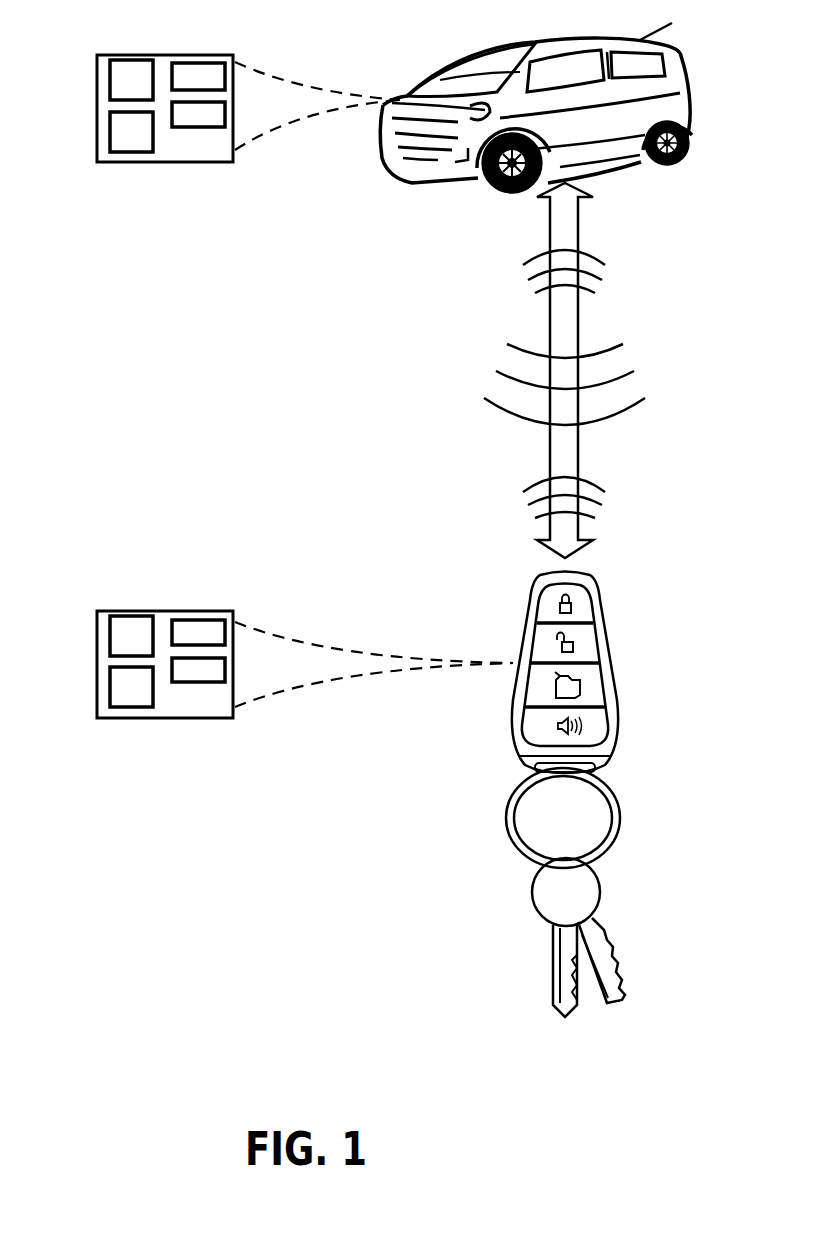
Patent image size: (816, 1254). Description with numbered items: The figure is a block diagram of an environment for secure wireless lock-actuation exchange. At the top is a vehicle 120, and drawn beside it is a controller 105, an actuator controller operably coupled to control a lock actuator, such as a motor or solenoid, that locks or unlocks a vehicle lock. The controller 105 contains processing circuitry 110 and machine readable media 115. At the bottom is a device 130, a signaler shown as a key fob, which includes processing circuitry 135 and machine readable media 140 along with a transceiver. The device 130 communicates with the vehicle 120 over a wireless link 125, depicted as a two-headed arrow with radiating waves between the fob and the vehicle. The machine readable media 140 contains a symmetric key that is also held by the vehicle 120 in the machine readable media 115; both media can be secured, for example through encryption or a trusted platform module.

The controller 105 is at (158, 92).
The processing circuitry 110 is at (131, 60).
The machine readable media 115 is at (111, 132).
The vehicle 120 is at (541, 38).
The wireless link 125 is at (550, 238).
The device 130 is at (533, 585).
The processing circuitry 135 is at (131, 616).
The machine readable media 140 is at (111, 688).